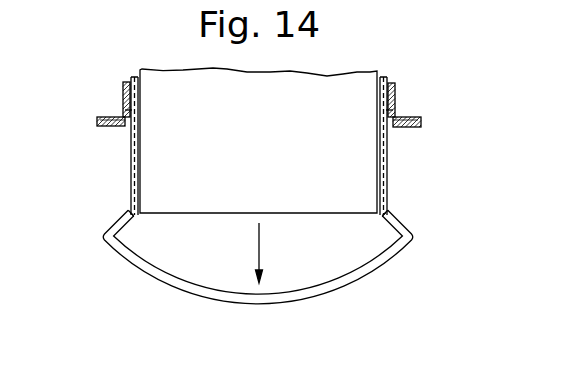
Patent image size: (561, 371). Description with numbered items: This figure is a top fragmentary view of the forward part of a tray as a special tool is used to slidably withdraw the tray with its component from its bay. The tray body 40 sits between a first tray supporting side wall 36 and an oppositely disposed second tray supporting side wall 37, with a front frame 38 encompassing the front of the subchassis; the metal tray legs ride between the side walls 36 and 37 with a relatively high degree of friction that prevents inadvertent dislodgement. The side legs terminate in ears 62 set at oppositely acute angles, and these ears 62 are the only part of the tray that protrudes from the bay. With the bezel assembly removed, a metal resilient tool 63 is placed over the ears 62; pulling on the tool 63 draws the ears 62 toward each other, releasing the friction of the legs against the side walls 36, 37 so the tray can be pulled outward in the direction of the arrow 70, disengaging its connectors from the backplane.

The first tray supporting side wall 36 is at (122, 100).
The second tray supporting side wall 37 is at (395, 104).
The front frame 38 is at (108, 125).
The housing body 40 is at (272, 154).
The ears 62 is at (123, 228).
The metal resilient tool 63 is at (236, 298).
The direction of movement arrow 70 is at (242, 203).